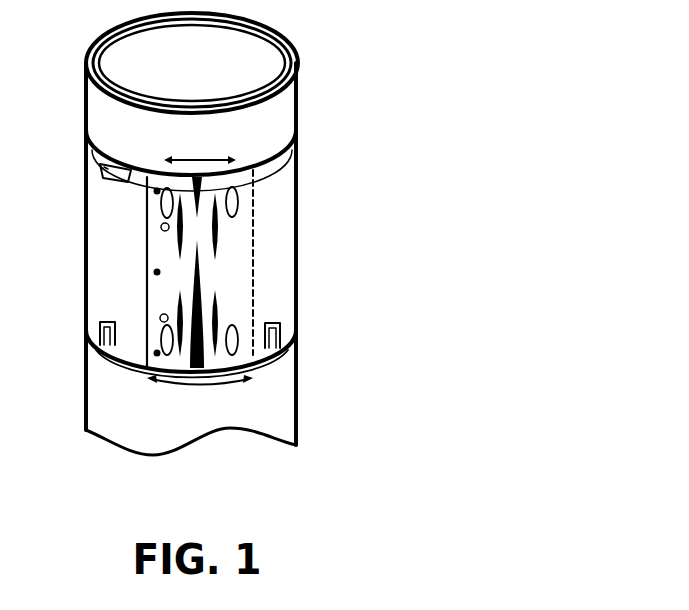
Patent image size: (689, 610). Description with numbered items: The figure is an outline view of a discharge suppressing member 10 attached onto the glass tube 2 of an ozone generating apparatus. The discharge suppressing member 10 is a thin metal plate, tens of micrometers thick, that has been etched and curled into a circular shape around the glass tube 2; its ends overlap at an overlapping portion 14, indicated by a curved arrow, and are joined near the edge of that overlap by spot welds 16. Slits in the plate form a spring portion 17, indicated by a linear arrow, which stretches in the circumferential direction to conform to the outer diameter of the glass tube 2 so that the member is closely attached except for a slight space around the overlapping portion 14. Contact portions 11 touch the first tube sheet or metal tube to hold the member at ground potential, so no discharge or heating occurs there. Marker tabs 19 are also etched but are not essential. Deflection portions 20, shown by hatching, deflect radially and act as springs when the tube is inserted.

The glass tube 2 is at (238, 102).
The discharge suppressing member 10 is at (246, 259).
The contact portions 11 is at (183, 363).
The overlapping portion 14 is at (200, 395).
The spot welds 16 is at (88, 276).
The spring portion 17 is at (200, 146).
The marker tabs 19 is at (86, 160).
The deflection portions 20 is at (192, 271).